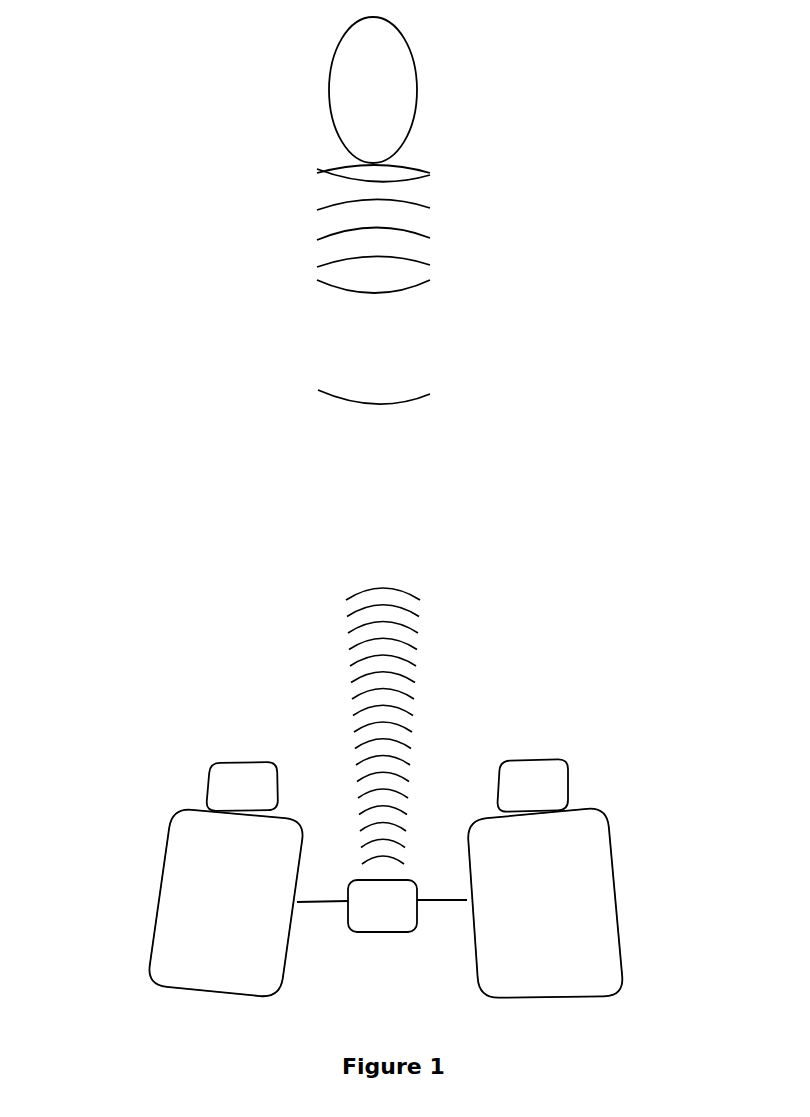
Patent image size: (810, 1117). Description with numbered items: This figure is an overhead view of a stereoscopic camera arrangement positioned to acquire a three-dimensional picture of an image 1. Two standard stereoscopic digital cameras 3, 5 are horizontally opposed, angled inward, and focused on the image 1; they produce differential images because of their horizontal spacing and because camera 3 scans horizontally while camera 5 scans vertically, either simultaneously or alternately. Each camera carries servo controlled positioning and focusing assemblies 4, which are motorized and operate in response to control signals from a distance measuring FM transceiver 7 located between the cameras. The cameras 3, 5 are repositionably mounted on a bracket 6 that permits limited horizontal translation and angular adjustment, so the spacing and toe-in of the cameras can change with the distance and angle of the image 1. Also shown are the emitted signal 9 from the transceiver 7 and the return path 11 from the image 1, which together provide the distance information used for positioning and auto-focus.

The image 1 is at (418, 90).
The stereoscopic digital camera 3 is at (152, 897).
The servo controlled positioning and focusing assembly 4 is at (193, 857).
The stereoscopic digital camera 5 is at (612, 867).
The bracket 6 is at (438, 897).
The distance measuring FM transceiver 7 is at (367, 937).
The radiation beam 9 is at (410, 598).
The reflector arc 11 is at (402, 400).